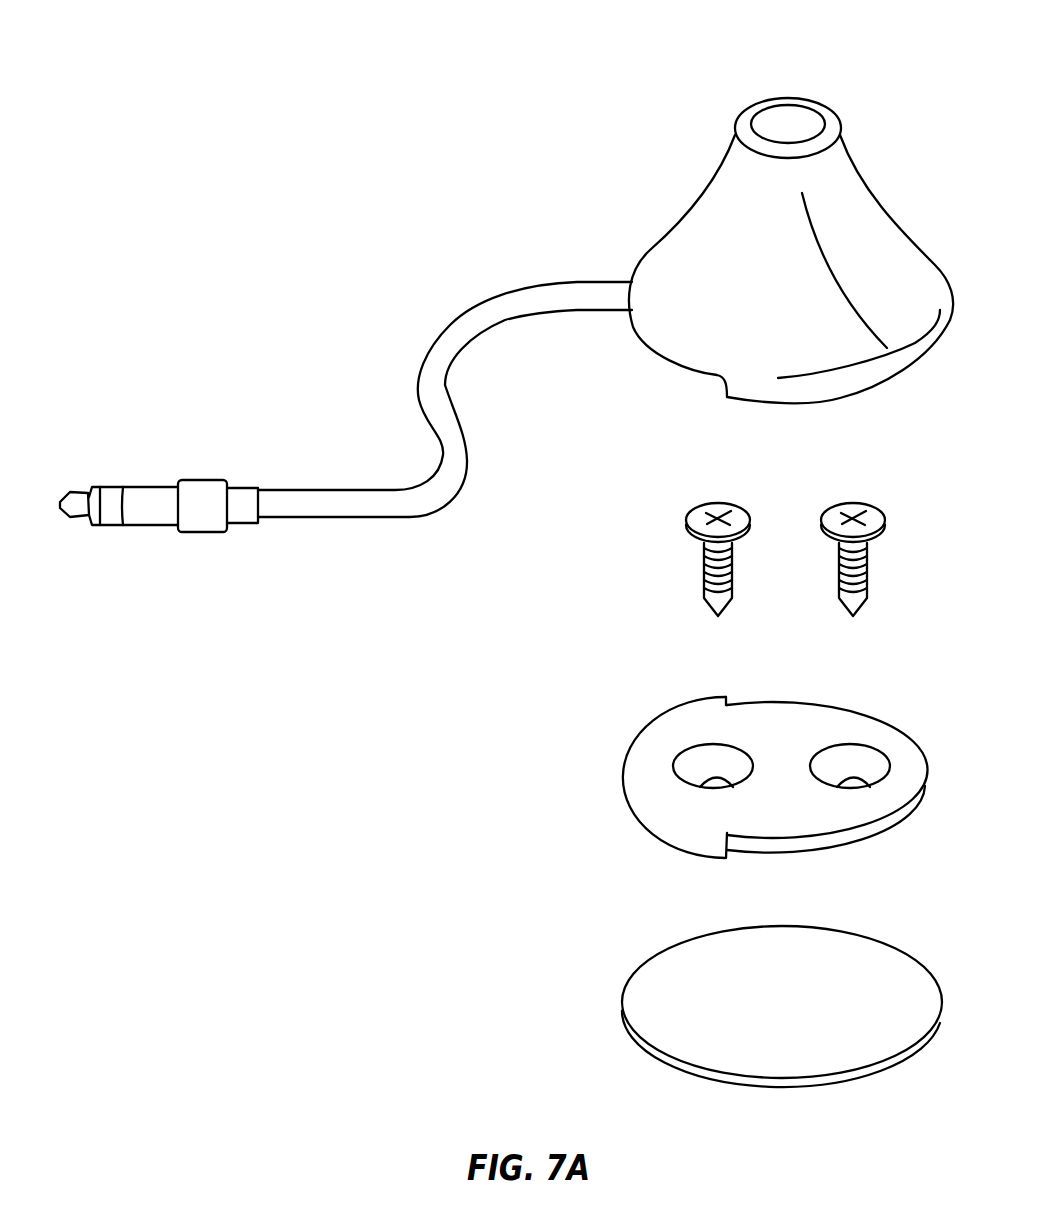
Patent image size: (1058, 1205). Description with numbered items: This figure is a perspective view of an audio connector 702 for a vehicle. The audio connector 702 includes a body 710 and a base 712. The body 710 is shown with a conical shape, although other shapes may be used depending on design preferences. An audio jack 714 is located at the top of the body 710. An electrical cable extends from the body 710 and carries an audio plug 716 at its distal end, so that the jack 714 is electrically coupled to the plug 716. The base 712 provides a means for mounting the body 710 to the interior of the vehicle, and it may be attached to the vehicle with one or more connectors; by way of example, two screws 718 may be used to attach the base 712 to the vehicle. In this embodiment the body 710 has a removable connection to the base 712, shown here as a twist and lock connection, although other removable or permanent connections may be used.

The audio connector 702 is at (417, 136).
The body 710 is at (703, 207).
The base 712 is at (427, 478).
The audio jack 714 is at (787, 122).
The audio plug 716 is at (147, 482).
The screws 718 is at (715, 502).